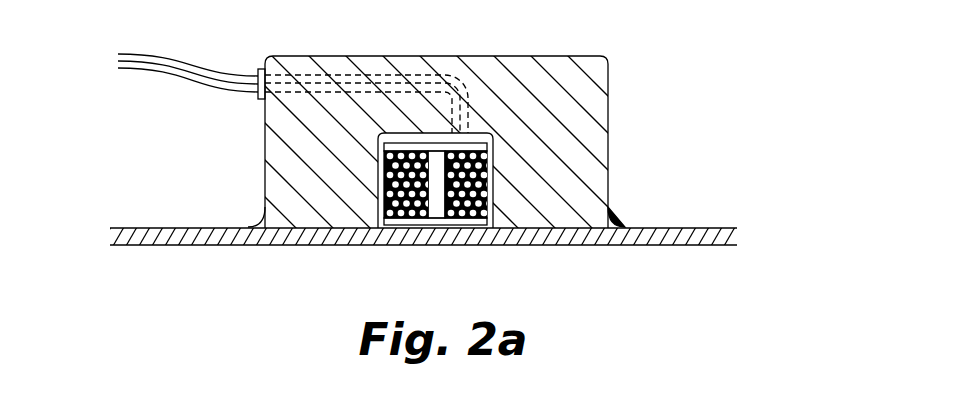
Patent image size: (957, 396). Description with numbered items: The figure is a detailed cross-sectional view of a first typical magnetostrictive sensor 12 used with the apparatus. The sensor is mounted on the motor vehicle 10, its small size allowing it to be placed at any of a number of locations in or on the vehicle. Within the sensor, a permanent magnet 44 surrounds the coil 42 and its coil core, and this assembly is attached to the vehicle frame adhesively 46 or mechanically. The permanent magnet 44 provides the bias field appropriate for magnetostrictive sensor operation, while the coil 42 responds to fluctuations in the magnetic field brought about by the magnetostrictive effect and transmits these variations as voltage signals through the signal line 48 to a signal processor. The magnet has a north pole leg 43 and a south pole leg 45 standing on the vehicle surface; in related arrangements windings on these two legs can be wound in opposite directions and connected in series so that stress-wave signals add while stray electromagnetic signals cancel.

The motor vehicle 10 is at (186, 227).
The magnetostrictive sensor 12 is at (645, 62).
The coil 42 is at (487, 163).
The north pole leg 43 is at (437, 207).
The permanent magnet 44 is at (438, 56).
The south pole leg 45 is at (555, 218).
The adhesive 46 is at (613, 226).
The signal line 48 is at (153, 52).